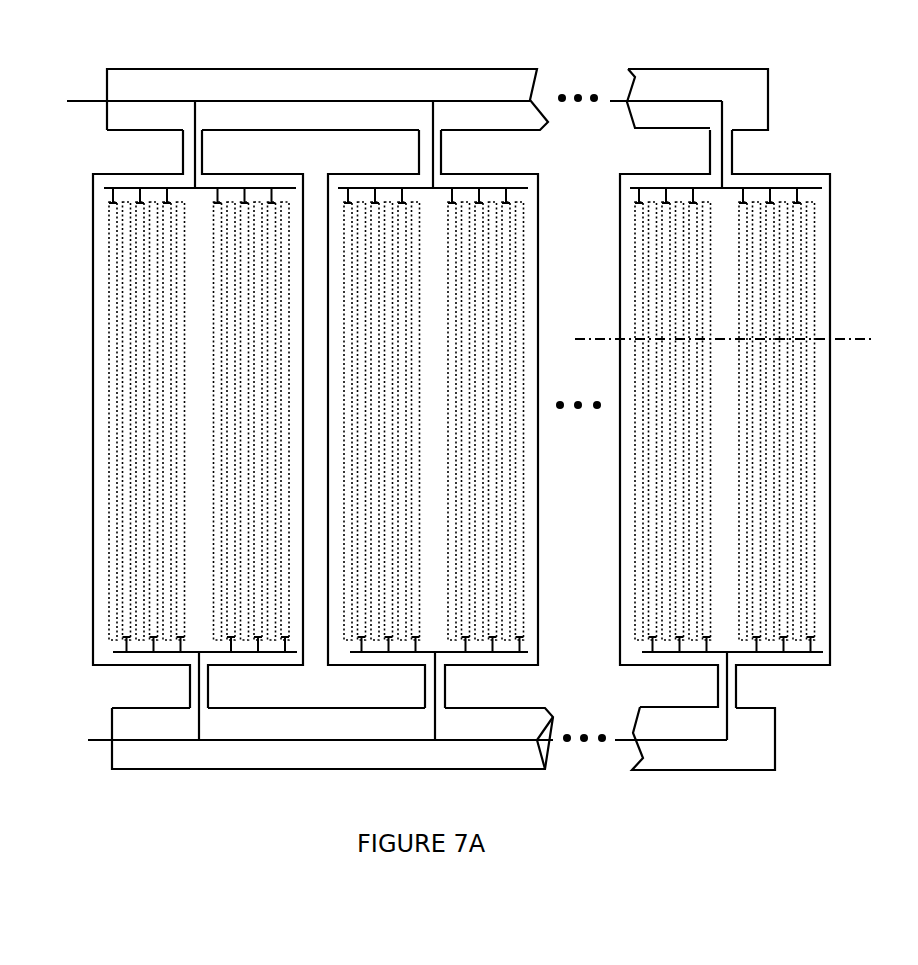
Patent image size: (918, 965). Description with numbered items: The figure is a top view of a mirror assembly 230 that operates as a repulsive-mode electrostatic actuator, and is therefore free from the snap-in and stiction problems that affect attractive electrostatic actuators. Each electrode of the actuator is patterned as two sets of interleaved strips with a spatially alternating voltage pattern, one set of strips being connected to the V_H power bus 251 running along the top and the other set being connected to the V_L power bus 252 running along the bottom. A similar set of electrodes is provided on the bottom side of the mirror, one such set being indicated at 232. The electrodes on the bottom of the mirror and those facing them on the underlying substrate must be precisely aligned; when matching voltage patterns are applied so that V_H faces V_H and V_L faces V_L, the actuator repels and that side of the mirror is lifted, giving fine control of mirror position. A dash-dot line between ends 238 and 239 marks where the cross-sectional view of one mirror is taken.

The mirror assembly 230 is at (95, 38).
The V_H power bus 251 is at (312, 101).
The V_L power bus 252 is at (313, 743).
The electrode set on bottom side of mirror 232 is at (818, 171).
The section line end 238 is at (848, 346).
The section line end 239 is at (583, 346).